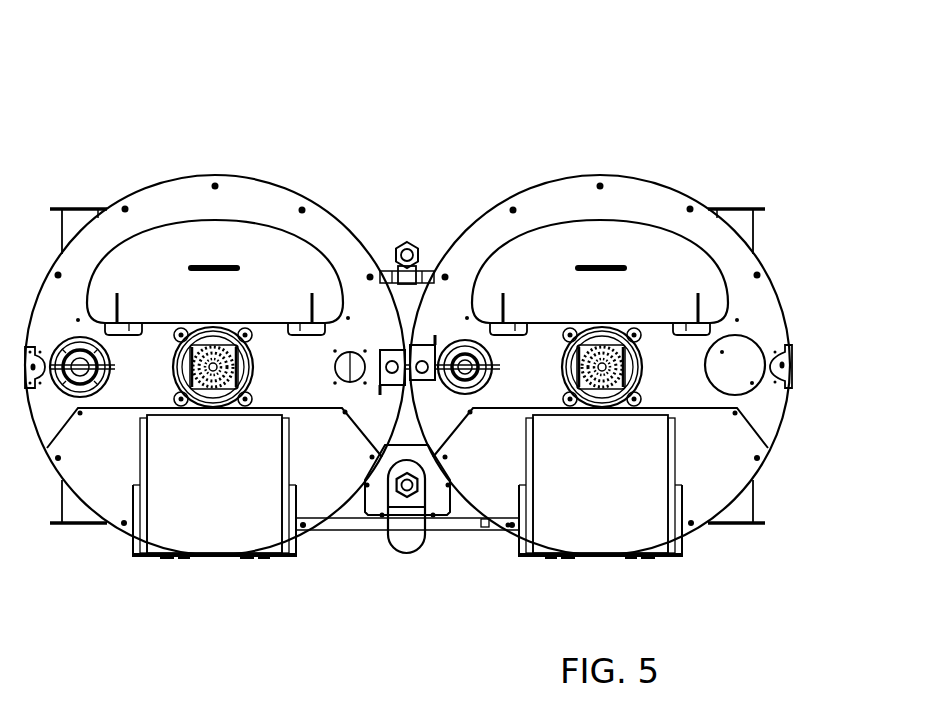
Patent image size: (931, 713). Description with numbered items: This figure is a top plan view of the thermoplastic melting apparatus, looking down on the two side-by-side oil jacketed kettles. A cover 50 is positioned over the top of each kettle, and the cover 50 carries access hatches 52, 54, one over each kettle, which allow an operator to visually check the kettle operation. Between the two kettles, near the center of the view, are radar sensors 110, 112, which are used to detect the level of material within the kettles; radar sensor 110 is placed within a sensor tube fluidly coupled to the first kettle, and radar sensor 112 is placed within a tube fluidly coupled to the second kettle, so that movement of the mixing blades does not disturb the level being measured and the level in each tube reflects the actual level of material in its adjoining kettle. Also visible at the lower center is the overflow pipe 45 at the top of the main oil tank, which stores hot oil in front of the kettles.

The overflow pipe 45 is at (408, 537).
The cover 50 is at (768, 312).
The access hatch 52 is at (608, 245).
The access hatch 54 is at (237, 243).
The radar sensor 110 is at (390, 347).
The radar sensor 112 is at (418, 345).